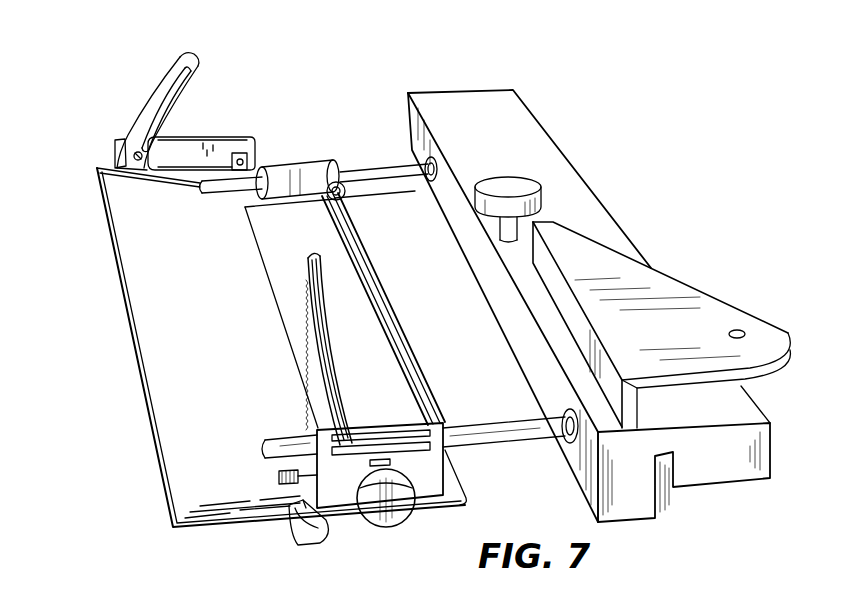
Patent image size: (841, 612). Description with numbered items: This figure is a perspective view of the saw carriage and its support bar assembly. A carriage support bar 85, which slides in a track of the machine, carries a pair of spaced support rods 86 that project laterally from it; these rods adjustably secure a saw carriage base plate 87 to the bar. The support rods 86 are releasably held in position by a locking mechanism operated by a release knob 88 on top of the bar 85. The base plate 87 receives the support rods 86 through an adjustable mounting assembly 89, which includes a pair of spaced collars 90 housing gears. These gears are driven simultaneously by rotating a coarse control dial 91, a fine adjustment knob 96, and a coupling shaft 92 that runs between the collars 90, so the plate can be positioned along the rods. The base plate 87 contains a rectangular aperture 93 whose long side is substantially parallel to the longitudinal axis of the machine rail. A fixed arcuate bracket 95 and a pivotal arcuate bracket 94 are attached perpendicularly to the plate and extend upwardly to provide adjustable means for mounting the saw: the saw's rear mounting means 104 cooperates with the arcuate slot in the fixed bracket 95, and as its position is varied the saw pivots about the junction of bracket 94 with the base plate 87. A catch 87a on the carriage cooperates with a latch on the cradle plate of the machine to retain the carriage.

The carriage support bar 85 is at (557, 188).
The support rods 86 is at (400, 172).
The saw carriage base plate 87 is at (197, 421).
The catch 87a is at (312, 525).
The release knob 88 is at (510, 173).
The adjustable mounting assembly 89 is at (337, 160).
The collars 90 is at (288, 175).
The coarse control dial 91 is at (395, 512).
The coupling shaft 92 is at (348, 254).
The rectangular aperture 93 is at (256, 233).
The pivotal arcuate bracket 94 is at (321, 330).
The fixed arcuate bracket 95 is at (176, 72).
The fine adjustment knob 96 is at (277, 480).
The rear mounting means 104 is at (243, 133).